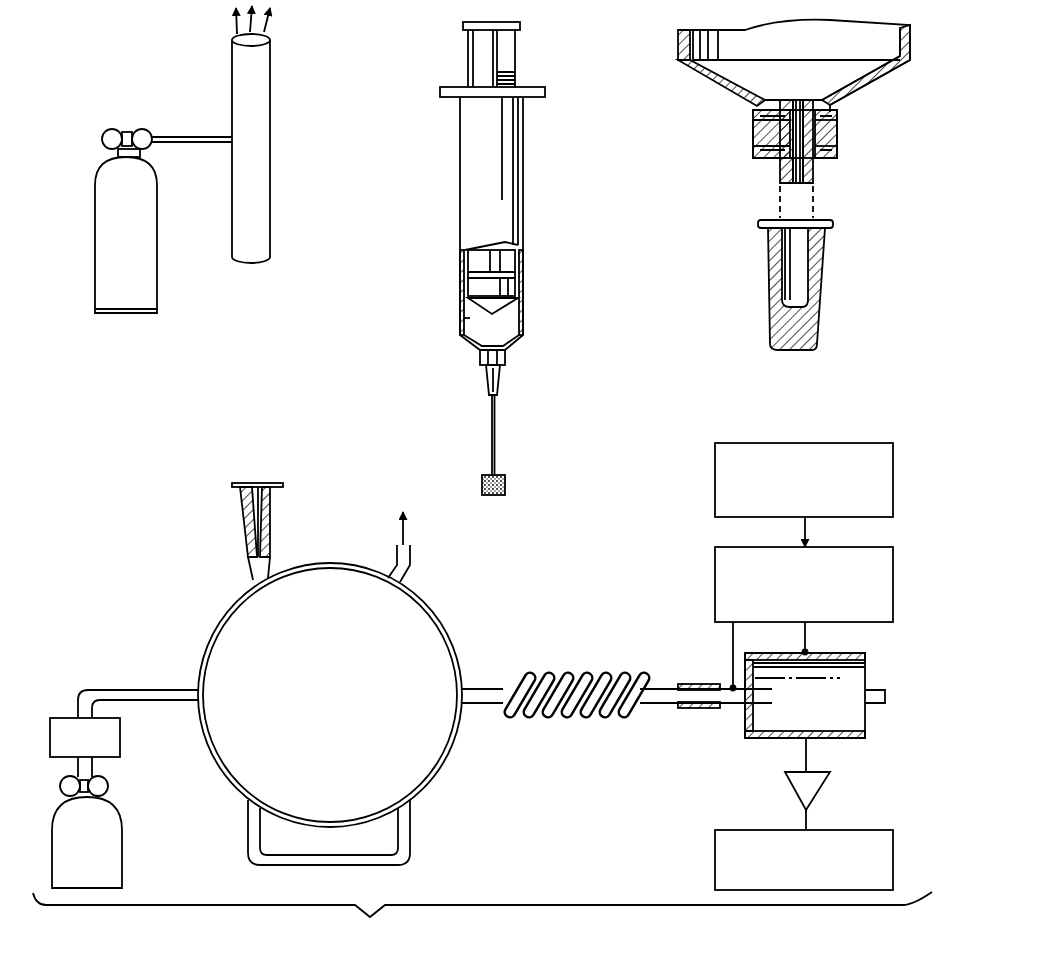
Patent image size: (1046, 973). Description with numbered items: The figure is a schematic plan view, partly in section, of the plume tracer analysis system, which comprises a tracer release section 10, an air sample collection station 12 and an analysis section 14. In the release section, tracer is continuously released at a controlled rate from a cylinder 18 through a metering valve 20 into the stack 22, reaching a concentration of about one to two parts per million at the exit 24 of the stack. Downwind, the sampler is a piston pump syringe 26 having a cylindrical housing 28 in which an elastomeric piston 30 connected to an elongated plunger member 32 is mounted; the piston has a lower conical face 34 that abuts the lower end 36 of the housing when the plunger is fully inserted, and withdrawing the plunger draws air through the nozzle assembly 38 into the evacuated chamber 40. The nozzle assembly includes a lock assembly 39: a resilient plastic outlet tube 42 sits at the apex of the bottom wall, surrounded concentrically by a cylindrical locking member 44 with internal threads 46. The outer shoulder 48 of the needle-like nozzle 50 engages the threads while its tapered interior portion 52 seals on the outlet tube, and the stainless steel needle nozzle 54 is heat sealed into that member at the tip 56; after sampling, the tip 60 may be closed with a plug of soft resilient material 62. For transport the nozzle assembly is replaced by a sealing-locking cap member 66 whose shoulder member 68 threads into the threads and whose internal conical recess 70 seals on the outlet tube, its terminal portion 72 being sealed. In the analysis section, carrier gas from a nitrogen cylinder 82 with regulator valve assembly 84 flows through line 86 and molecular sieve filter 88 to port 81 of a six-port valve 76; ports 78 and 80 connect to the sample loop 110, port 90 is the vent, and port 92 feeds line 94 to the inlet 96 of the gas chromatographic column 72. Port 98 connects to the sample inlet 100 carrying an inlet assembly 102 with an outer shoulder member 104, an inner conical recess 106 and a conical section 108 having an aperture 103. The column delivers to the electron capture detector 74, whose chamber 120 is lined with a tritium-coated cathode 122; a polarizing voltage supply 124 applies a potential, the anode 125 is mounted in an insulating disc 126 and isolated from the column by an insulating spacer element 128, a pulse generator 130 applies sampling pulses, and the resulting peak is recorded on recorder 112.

The tracer release section 10 is at (195, 189).
The air sample collection station 12 is at (490, 481).
The analysis section 14 is at (110, 508).
The cylinder 18 is at (95, 180).
The metering valve 20 is at (160, 112).
The stack 22 is at (271, 105).
The exit 24 is at (278, 16).
The piston pump syringe 26 is at (575, 130).
The cylindrical housing 28 is at (524, 190).
The elastomeric piston 30 is at (500, 282).
The elongated plunger member 32 is at (516, 63).
The lower conical face 34 is at (506, 305).
The lower end 36 is at (513, 343).
The nozzle assembly 38 is at (485, 449).
The lock assembly 39 is at (737, 146).
The evacuated chamber 40 is at (483, 318).
The cylindrical outlet tube 42 is at (777, 168).
The cylindrical locking member 44 is at (838, 135).
The internal threads 46 is at (825, 160).
The outer shoulder 48 is at (500, 365).
The needle-like nozzle 50 is at (498, 393).
The tapered interior portion 52 is at (485, 380).
The needle nozzle 54 is at (491, 458).
The tip 56 is at (497, 396).
The tip 60 is at (496, 496).
The plug of soft, resilient material 62 is at (508, 485).
The sealing-locking cap member 66 is at (595, 433).
The shoulder member 68 is at (835, 222).
The internal conical recess 70 is at (800, 275).
The terminal portion 72 is at (812, 345).
The electron capture detector 74 is at (793, 693).
The six-port valve 76 is at (335, 562).
The port 78 is at (400, 808).
The port 80 is at (260, 810).
The port 81 is at (203, 700).
The nitrogen carrier gas supply cylinder 82 is at (122, 877).
The regulator valve assembly 84 is at (110, 786).
The line 86 is at (158, 690).
The molecular sieve filter 88 is at (68, 718).
The vent port 90 is at (395, 577).
The port 92 is at (460, 696).
The line 94 is at (486, 688).
The inlet 96 is at (510, 684).
The port 98 is at (265, 583).
The sample inlet 100 is at (247, 572).
The inlet assembly 102 is at (242, 491).
The aperture 103 is at (248, 540).
The outer shoulder member 104 is at (235, 485).
The inner conical recess 106 is at (259, 487).
The conical section 108 is at (270, 545).
The sample loop 110 is at (329, 830).
The recorder 112 is at (868, 830).
The chamber 120 is at (840, 708).
The cathode 122 is at (868, 665).
The polarizing voltage supply 124 is at (870, 547).
The anode 125 is at (728, 706).
The insulating disc 126 is at (752, 728).
The insulating spacer element 128 is at (690, 684).
The pulse generator 130 is at (860, 446).